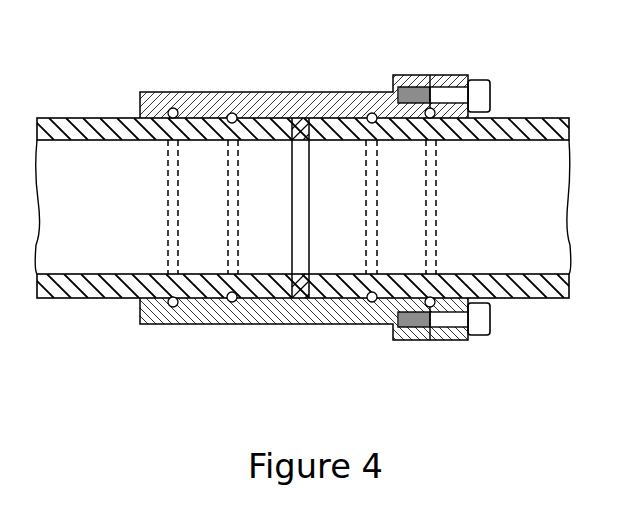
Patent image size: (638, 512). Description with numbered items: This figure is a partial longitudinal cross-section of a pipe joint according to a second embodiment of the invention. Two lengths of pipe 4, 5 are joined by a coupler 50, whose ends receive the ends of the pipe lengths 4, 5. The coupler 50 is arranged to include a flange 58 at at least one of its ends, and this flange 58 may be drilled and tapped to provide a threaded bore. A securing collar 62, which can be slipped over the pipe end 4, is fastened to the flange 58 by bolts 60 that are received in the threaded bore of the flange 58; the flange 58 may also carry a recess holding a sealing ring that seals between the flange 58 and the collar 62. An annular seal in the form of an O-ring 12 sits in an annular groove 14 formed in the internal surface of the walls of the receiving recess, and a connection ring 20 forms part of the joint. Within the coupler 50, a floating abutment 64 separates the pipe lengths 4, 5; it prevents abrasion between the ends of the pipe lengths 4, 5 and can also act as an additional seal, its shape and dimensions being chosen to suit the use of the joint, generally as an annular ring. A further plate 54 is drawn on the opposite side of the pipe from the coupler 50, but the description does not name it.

The pipe 4 is at (550, 298).
The pipe 5 is at (85, 298).
The O-ring 12 is at (458, 148).
The annular groove 14 is at (167, 130).
The connection ring 20 is at (378, 322).
The coupler 50 is at (183, 92).
The lower clamp plate 54 is at (452, 274).
The flange 58 is at (413, 75).
The bolts 60 is at (491, 90).
The securing collar 62 is at (443, 75).
The floating abutment 64 is at (305, 157).